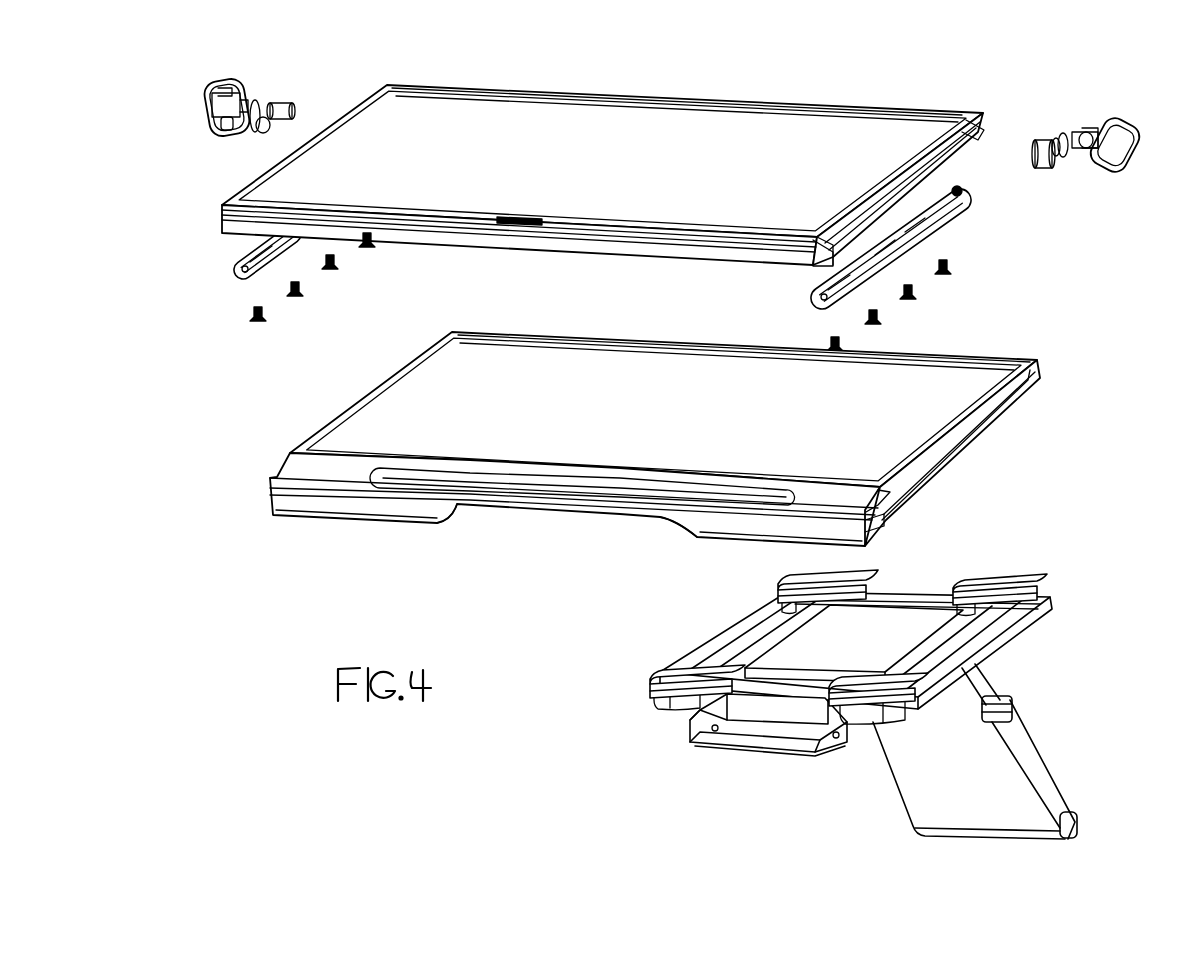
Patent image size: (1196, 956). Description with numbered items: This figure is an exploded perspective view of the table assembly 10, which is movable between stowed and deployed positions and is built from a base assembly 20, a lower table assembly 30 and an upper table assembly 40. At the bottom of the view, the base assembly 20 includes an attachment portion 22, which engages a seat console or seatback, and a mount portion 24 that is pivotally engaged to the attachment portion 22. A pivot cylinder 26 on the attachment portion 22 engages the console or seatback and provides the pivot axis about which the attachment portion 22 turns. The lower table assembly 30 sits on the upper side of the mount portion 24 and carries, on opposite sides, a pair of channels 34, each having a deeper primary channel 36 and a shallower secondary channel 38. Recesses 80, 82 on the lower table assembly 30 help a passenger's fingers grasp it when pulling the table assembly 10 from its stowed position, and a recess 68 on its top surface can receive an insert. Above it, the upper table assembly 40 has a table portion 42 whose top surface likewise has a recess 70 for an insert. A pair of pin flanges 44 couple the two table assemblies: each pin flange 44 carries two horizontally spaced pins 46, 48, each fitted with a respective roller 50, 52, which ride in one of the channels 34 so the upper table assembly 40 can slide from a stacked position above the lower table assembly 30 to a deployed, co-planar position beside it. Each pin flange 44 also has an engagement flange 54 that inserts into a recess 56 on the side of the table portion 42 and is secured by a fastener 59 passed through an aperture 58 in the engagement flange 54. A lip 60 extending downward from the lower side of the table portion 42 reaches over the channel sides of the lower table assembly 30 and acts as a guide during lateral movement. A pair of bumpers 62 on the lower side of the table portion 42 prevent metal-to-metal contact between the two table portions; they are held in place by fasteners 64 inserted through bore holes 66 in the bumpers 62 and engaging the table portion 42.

The table assembly 10 is at (1078, 316).
The base assembly 20 is at (1035, 762).
The attachment portion 22 is at (893, 760).
The mount portion 24 is at (650, 700).
The pivot cylinder 26 is at (1080, 818).
The lower table assembly 30 is at (379, 525).
The channel 34 is at (955, 447).
The primary channel 36 is at (888, 516).
The secondary channel 38 is at (870, 534).
The upper table assembly 40 is at (695, 100).
The table portion 42 is at (612, 92).
The pin flange 44 is at (204, 93).
The pin 46 is at (226, 130).
The pin 48 is at (252, 104).
The roller 50 is at (260, 133).
The roller 52 is at (288, 103).
The engagement flange 54 is at (236, 100).
The recess 56 is at (978, 133).
The aperture 58 is at (228, 88).
The fastener 59 is at (962, 188).
The lip 60 is at (813, 265).
The bumper 62 is at (818, 305).
The fastener 64 is at (336, 272).
The bore hole 66 is at (920, 233).
The recess 68 is at (568, 399).
The recess 70 is at (590, 175).
The recess 80 is at (662, 500).
The recess 82 is at (527, 520).